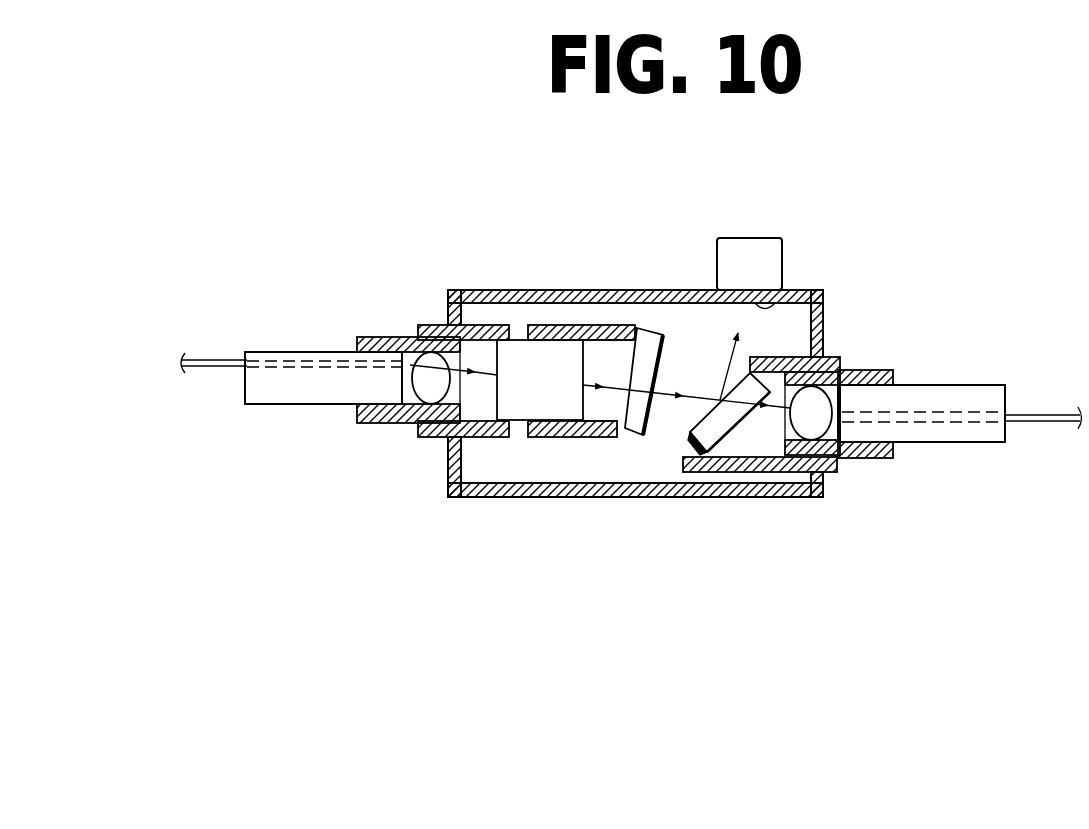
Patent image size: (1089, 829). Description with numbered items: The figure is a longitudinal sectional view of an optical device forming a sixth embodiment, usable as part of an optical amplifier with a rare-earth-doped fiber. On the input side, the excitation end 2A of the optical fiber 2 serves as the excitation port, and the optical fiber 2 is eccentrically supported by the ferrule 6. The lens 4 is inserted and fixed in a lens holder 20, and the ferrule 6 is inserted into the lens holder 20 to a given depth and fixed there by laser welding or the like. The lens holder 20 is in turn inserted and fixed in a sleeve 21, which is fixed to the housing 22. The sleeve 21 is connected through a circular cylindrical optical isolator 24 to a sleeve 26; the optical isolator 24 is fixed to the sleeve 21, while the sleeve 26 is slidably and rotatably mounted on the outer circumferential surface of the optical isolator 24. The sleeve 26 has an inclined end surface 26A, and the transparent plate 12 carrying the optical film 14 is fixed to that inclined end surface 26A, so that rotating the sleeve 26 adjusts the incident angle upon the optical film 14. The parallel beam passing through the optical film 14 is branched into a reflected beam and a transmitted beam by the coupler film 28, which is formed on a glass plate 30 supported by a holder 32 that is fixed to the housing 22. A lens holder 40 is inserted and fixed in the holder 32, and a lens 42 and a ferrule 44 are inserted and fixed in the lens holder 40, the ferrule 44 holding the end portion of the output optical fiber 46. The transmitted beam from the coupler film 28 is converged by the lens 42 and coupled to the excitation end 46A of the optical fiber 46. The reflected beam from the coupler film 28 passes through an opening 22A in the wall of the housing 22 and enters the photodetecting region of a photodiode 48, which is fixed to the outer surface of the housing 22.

The optical fiber 2 is at (210, 354).
The excitation end 2A is at (407, 337).
The lens 4 is at (405, 407).
The ferrule 6 is at (245, 400).
The transparent plate 12 is at (605, 397).
The optical film 14 is at (664, 343).
The lens holder 20 is at (357, 423).
The sleeve 21 is at (435, 325).
The housing 22 is at (480, 288).
The opening 22A is at (790, 302).
The optical isolator 24 is at (518, 421).
The sleeve 26 is at (555, 323).
The inclined end surface 26A is at (627, 418).
The coupler film 28 is at (693, 432).
The glass plate 30 is at (726, 433).
The holder 32 is at (787, 472).
The lens holder 40 is at (877, 458).
The lens 42 is at (840, 357).
The ferrule 44 is at (968, 385).
The output optical fiber 46 is at (1050, 412).
The excitation end 46A is at (842, 372).
The photodiode 48 is at (758, 238).